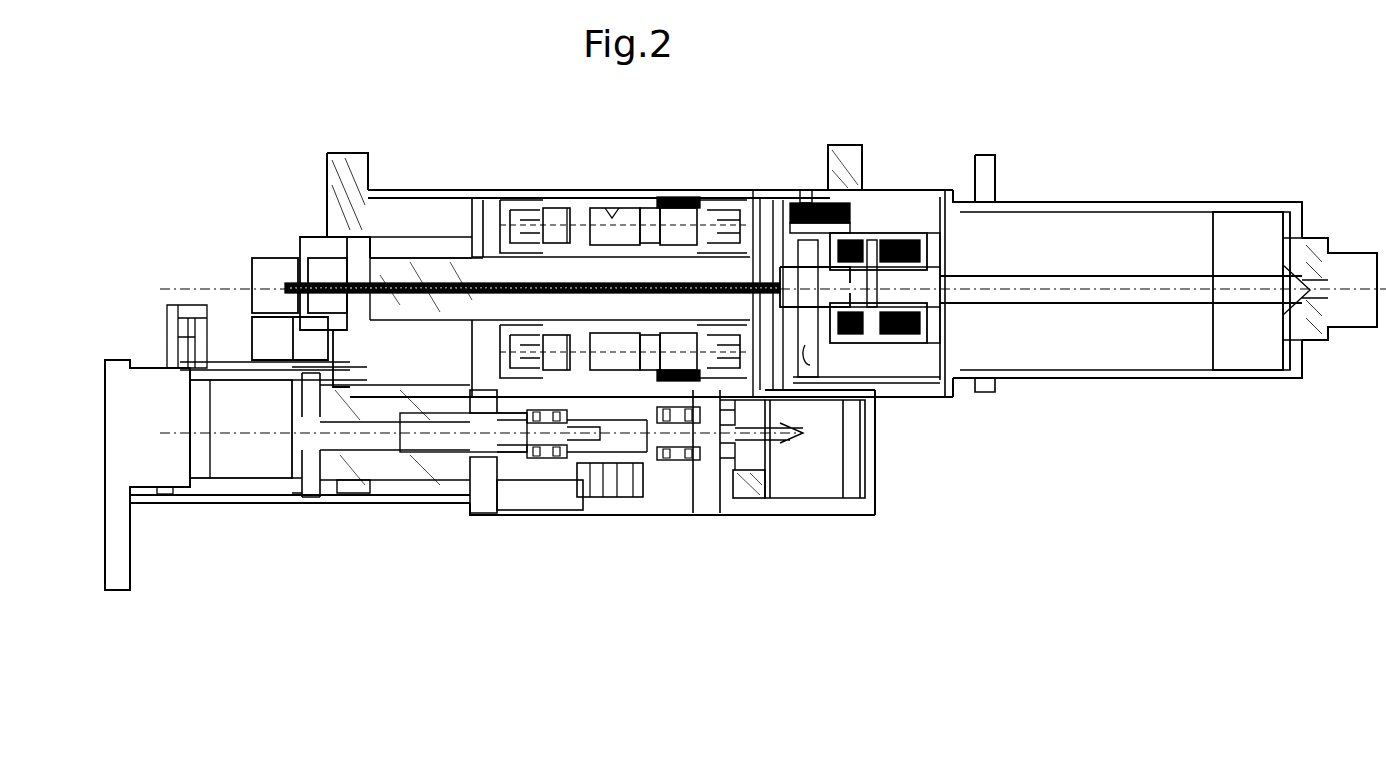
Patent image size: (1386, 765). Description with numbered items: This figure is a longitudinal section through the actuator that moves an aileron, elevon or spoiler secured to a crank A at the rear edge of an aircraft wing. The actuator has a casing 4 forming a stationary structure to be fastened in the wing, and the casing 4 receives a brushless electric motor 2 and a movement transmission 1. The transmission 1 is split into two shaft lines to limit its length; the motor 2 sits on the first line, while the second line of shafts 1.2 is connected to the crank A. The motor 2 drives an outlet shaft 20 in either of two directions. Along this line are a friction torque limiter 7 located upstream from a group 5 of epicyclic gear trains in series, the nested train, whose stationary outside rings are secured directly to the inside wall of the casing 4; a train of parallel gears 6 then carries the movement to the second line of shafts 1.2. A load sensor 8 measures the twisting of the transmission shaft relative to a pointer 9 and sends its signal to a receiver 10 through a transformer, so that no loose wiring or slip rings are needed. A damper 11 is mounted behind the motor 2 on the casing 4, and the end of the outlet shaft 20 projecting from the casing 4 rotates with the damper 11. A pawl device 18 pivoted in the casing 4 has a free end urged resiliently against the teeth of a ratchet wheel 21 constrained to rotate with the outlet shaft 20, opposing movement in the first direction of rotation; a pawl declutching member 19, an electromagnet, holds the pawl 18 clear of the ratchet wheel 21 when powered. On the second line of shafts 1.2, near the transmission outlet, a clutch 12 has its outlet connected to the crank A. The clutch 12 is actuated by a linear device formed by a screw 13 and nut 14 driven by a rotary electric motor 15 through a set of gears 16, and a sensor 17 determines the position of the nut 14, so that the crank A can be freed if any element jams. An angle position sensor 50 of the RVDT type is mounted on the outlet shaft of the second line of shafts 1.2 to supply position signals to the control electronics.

The crank A is at (115, 356).
The transmission 1 is at (456, 214).
The second line of shafts 1.2 is at (398, 490).
The electric motor 2 is at (1195, 222).
The casing 4 is at (345, 152).
The group of epicyclic gear trains 5 is at (612, 216).
The train of parallel gears 6 is at (410, 245).
The torque limiter 7 is at (925, 252).
The load sensor 8 is at (322, 268).
The pointer 9 is at (562, 273).
The receiver 10 is at (278, 268).
The damper 11 is at (1362, 260).
The clutch 12 is at (238, 462).
The screw 13 is at (617, 438).
The nut 14 is at (587, 511).
The rotary electric motor 15 is at (822, 481).
The set of gears 16 is at (752, 492).
The sensor 17 is at (858, 468).
The pawl device 18 is at (801, 194).
The pawl declutching member 19 is at (847, 150).
The outlet shaft 20 is at (1130, 277).
The ratchet wheel 21 is at (810, 350).
The angle position sensor 50 is at (232, 316).